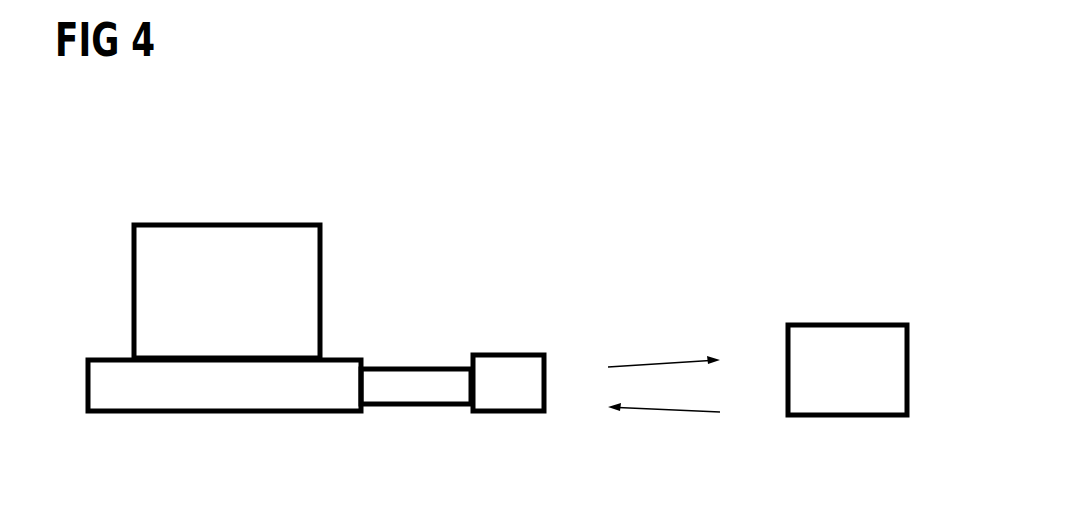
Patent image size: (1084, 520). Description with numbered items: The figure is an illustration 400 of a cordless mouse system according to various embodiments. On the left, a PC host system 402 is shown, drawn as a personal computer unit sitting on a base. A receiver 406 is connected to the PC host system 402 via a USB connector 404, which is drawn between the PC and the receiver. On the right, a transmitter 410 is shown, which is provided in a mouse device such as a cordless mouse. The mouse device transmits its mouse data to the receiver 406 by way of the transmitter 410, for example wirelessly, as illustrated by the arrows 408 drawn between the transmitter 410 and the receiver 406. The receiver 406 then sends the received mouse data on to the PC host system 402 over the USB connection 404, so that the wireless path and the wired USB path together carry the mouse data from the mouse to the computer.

The illustration of a cordless mouse system 400 is at (878, 115).
The PC host system 402 is at (247, 238).
The USB connector 404 is at (415, 410).
The receiver 406 is at (520, 368).
The arrows 408 is at (678, 367).
The transmitter 410 is at (838, 327).